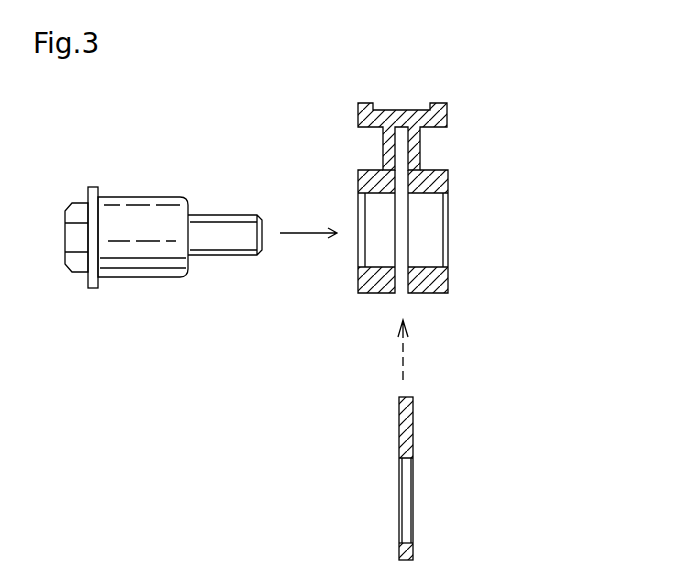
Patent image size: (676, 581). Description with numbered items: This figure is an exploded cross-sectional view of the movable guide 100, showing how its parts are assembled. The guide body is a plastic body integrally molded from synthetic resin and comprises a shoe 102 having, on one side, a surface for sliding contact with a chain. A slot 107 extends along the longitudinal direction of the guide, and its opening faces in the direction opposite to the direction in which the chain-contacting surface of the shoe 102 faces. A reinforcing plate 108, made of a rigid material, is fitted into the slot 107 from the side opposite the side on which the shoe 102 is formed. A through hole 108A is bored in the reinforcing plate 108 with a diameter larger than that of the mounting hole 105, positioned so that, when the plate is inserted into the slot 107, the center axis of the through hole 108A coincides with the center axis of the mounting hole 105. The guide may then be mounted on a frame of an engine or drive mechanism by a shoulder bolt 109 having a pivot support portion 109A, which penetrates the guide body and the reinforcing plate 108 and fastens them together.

The movable guide 100 is at (402, 78).
The shoe 102 is at (445, 115).
The mounting hole 105 is at (427, 267).
The slot 107 is at (412, 182).
The reinforcing plate 108 is at (413, 437).
The through hole 108A is at (408, 548).
The shoulder bolt 109 is at (163, 240).
The pivot support portion 109A is at (147, 210).